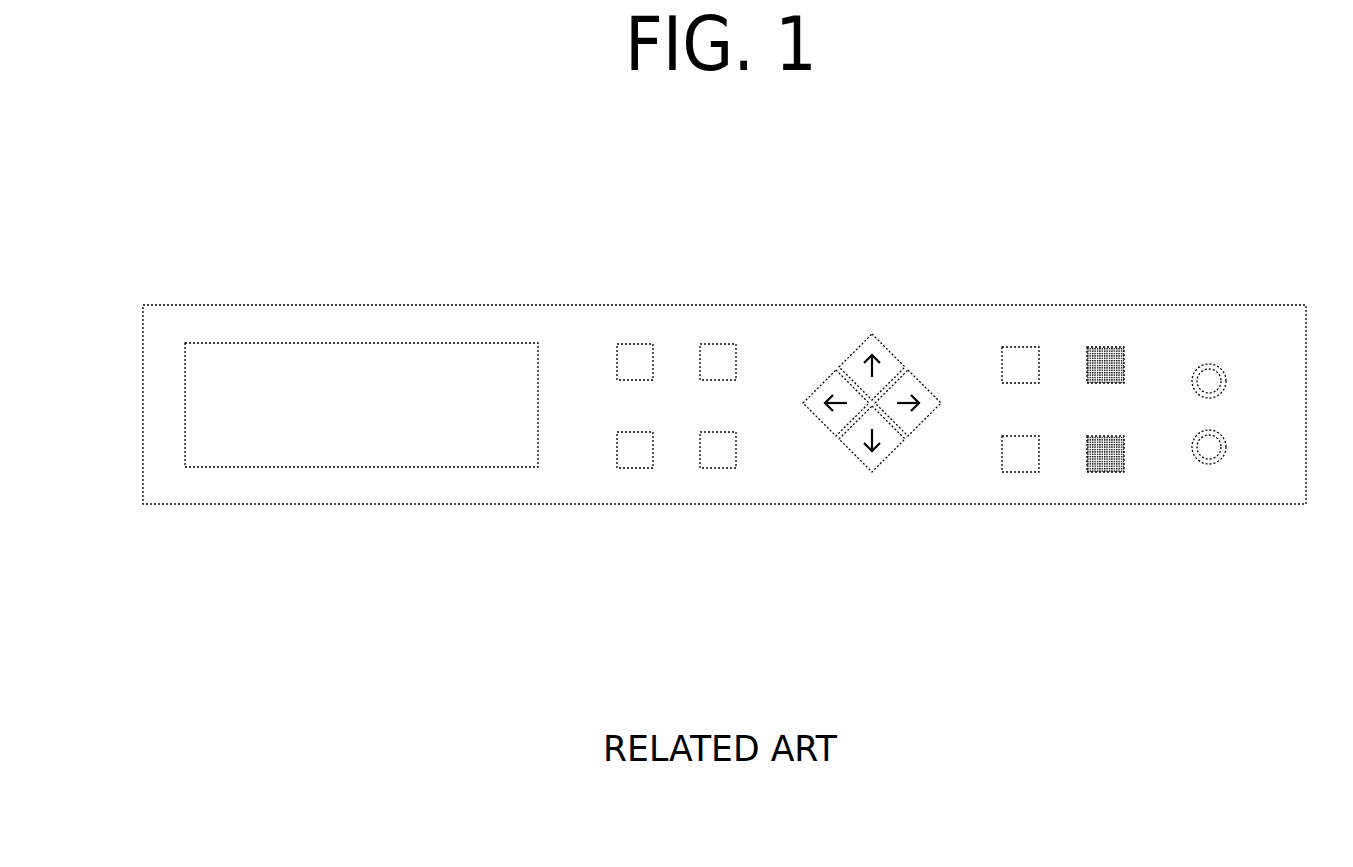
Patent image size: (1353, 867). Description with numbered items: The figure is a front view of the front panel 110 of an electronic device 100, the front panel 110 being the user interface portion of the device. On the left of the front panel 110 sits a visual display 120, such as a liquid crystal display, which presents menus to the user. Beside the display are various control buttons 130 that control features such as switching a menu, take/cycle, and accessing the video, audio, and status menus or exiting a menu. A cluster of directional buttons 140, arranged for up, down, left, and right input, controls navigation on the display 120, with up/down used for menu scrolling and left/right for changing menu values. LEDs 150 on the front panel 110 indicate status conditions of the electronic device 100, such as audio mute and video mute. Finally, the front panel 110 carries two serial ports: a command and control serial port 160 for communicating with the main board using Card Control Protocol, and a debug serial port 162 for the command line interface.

The electronic device 100 is at (297, 143).
The front panel 110 is at (460, 305).
The visual display 120 is at (372, 467).
The control buttons 130 is at (680, 470).
The directional buttons 140 is at (905, 365).
The LEDs 150 is at (1103, 348).
The command and control serial port 160 is at (1192, 381).
The debug serial port 162 is at (1208, 462).